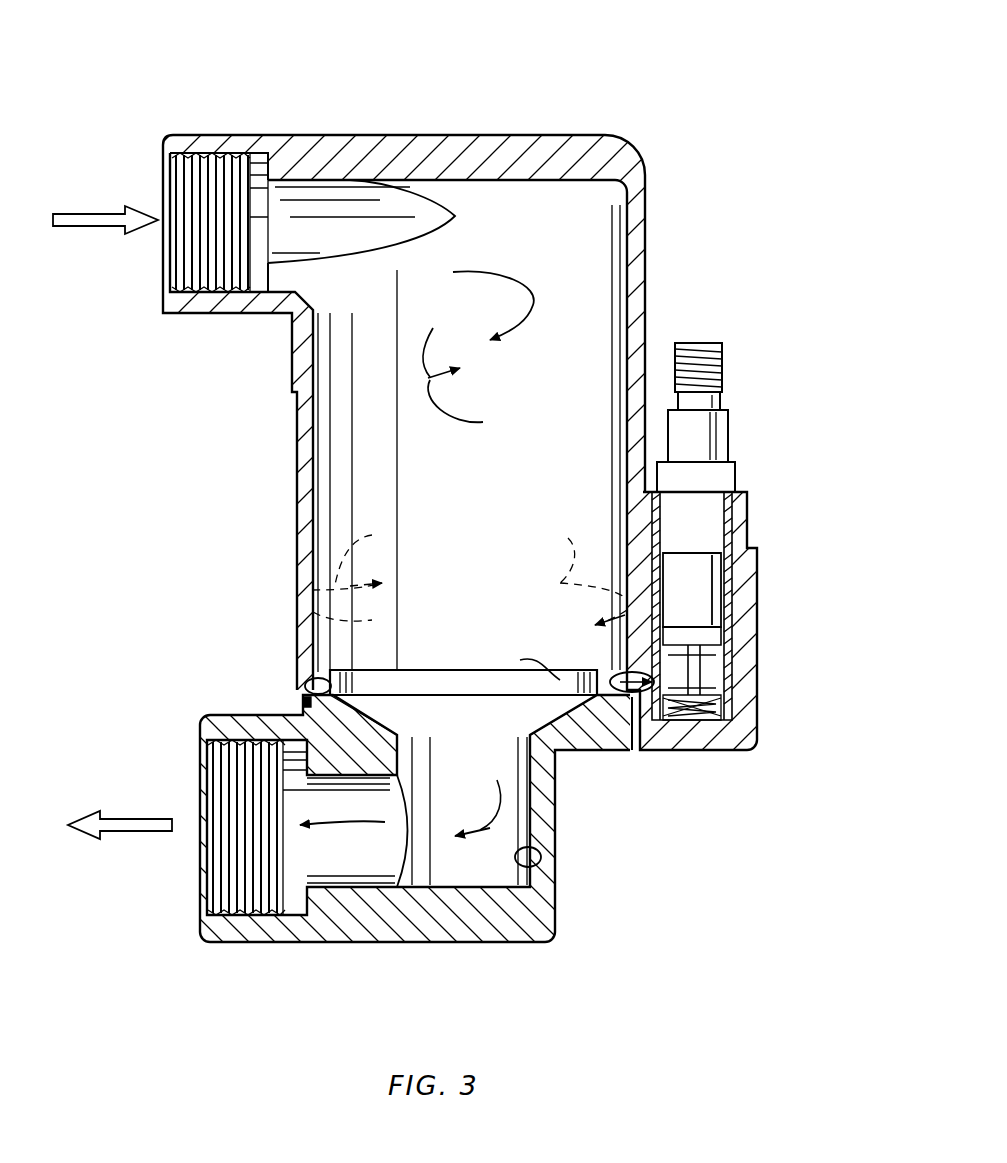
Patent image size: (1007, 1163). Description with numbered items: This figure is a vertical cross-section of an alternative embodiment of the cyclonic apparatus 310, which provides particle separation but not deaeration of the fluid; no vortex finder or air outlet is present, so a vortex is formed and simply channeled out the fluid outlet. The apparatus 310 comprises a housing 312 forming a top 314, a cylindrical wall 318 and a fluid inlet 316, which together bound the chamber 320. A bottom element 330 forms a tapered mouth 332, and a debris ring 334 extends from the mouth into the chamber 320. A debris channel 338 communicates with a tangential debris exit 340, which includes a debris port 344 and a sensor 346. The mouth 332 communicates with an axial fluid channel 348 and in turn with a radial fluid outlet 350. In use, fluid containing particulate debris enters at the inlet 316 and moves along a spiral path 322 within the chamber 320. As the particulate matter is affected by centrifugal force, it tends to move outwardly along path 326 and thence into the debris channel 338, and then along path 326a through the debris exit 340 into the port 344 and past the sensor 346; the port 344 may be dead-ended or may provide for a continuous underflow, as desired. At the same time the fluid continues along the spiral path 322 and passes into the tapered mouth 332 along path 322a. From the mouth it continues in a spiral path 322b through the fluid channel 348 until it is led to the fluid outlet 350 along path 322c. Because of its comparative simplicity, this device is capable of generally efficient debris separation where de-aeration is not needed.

The apparatus 310 is at (703, 100).
The housing 312 is at (292, 373).
The top 314 is at (490, 135).
The fluid inlet 316 is at (163, 183).
The cylindrical wall 318 is at (645, 285).
The chamber 320 is at (597, 275).
The spiral path 322 is at (490, 280).
The path 322a is at (480, 660).
The spiral path 322b is at (469, 811).
The path 322c is at (385, 822).
The path 326 is at (469, 574).
The path 326a is at (612, 752).
The bottom element 330 is at (557, 912).
The tapered mouth 332 is at (400, 700).
The debris ring 334 is at (305, 692).
The debris channel 338 is at (328, 675).
The tangential debris exit 340 is at (643, 720).
The debris port 344 is at (718, 680).
The sensor 346 is at (728, 437).
The axial fluid channel 348 is at (541, 858).
The radial fluid outlet 350 is at (210, 888).